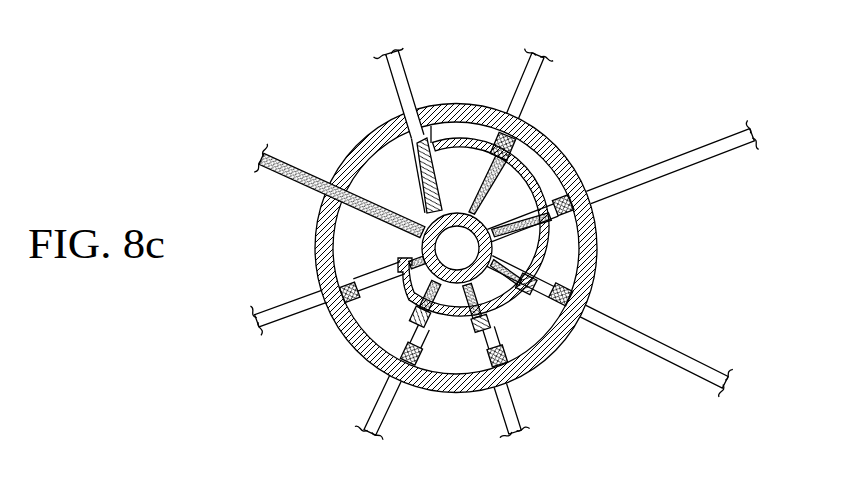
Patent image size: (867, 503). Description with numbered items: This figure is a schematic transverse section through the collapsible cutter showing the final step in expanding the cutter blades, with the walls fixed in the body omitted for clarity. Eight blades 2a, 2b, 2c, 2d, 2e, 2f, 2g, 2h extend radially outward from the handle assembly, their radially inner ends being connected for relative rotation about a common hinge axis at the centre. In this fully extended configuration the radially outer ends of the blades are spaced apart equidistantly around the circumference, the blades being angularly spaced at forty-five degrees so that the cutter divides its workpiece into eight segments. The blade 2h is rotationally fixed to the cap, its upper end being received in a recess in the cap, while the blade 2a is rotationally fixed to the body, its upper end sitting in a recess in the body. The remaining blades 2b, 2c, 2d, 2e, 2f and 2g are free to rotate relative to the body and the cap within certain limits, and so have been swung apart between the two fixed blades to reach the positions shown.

The blade 2a is at (291, 160).
The blade 2b is at (276, 306).
The blade 2c is at (387, 412).
The blade 2d is at (517, 414).
The blade 2e is at (646, 337).
The blade 2f is at (636, 181).
The blade 2g is at (537, 79).
The blade 2h is at (416, 80).